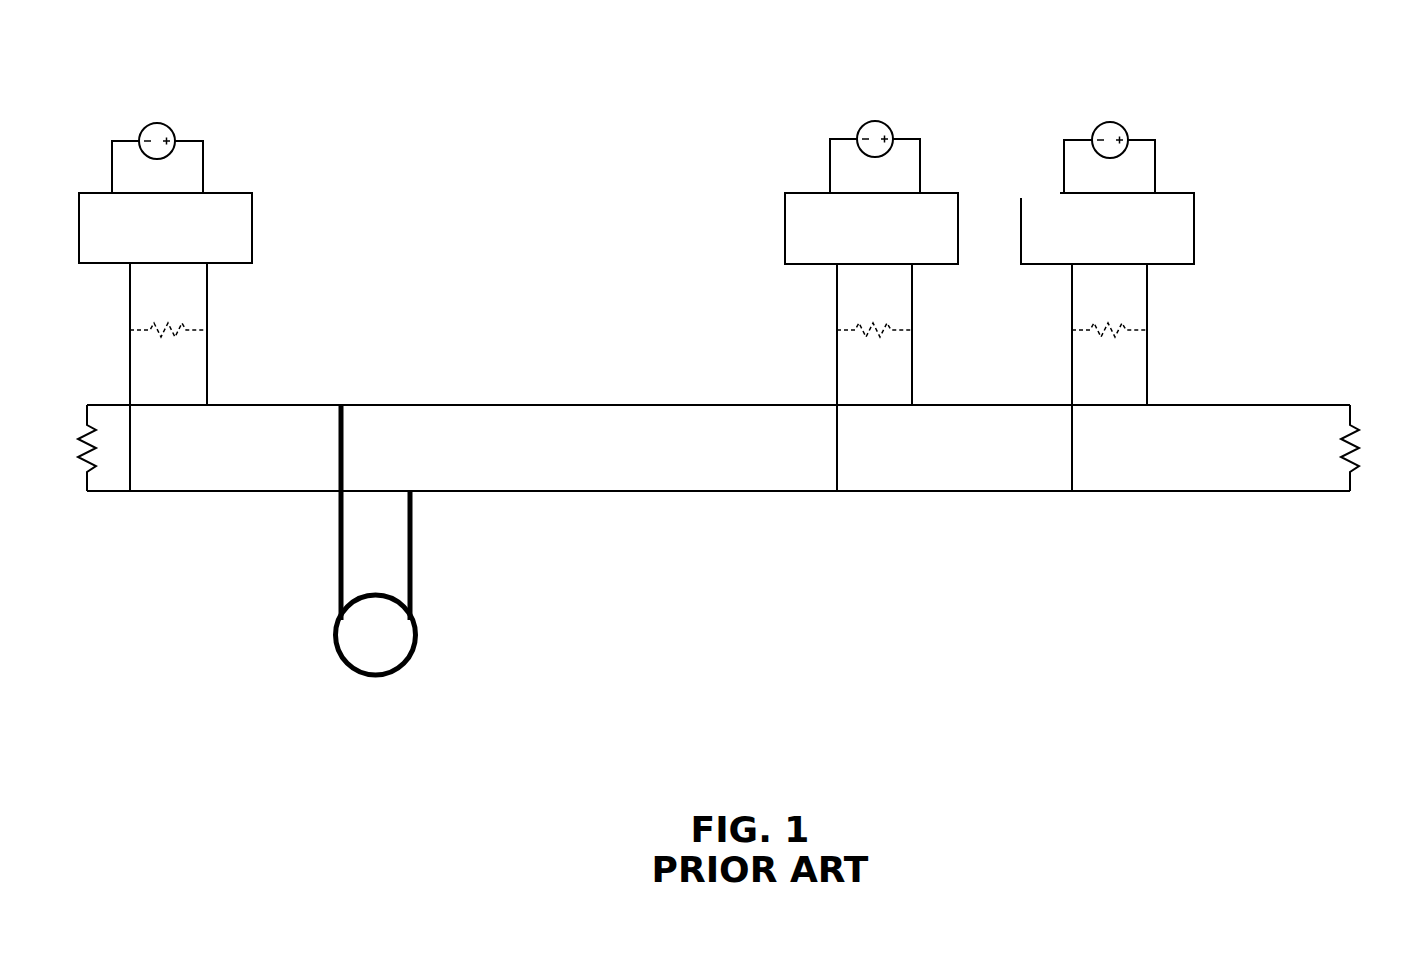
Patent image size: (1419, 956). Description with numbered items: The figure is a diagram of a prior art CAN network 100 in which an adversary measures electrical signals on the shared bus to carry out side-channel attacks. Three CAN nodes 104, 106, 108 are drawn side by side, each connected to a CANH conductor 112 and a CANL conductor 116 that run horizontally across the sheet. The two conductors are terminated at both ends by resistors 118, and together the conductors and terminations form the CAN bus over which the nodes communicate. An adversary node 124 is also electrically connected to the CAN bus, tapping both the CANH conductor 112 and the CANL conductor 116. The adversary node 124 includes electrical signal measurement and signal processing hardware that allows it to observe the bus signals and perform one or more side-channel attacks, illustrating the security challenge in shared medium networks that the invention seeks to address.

The CAN network 100 is at (197, 62).
The CAN node 104 is at (243, 190).
The CAN node 106 is at (927, 192).
The CAN node 108 is at (1182, 192).
The CANH conductor 112 is at (642, 403).
The CANL conductor 116 is at (642, 490).
The resistors 118 is at (95, 430).
The adversary node 124 is at (393, 672).